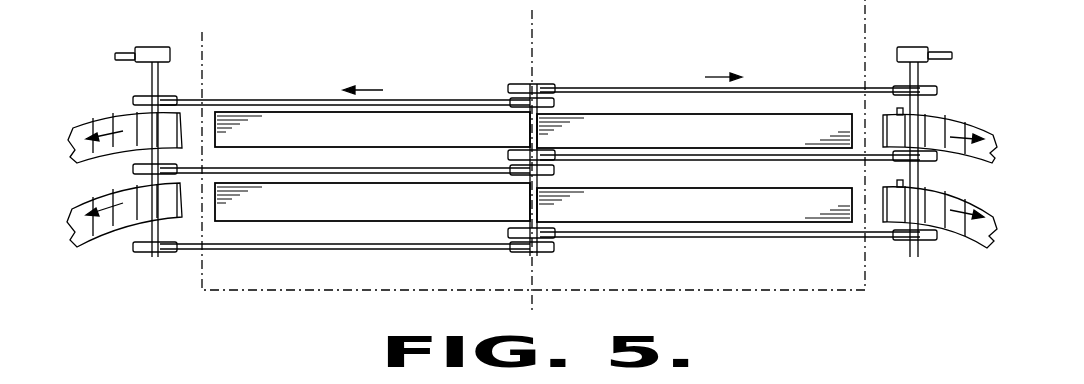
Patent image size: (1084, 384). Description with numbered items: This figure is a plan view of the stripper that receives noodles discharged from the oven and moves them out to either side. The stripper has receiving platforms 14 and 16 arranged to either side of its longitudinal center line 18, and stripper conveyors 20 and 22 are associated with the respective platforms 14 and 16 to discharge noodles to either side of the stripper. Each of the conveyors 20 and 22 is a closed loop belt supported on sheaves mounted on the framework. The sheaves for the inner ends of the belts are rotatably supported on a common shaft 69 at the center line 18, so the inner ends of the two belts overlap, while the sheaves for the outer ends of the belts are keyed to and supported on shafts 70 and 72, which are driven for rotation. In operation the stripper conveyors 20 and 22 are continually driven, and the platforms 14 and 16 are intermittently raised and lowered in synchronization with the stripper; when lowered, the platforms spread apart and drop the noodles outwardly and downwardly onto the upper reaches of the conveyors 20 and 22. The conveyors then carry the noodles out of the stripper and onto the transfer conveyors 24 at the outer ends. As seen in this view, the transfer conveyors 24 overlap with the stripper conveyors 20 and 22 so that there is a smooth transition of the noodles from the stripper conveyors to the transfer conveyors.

The receiving platform 14 is at (357, 142).
The receiving platform 16 is at (720, 144).
The longitudinal center line 18 is at (532, 46).
The stripper conveyor 20 is at (252, 101).
The stripper conveyor 22 is at (852, 86).
The transfer conveyor 24 is at (97, 114).
The common shaft 69 is at (534, 255).
The shaft 70 is at (157, 77).
The shaft 72 is at (913, 73).